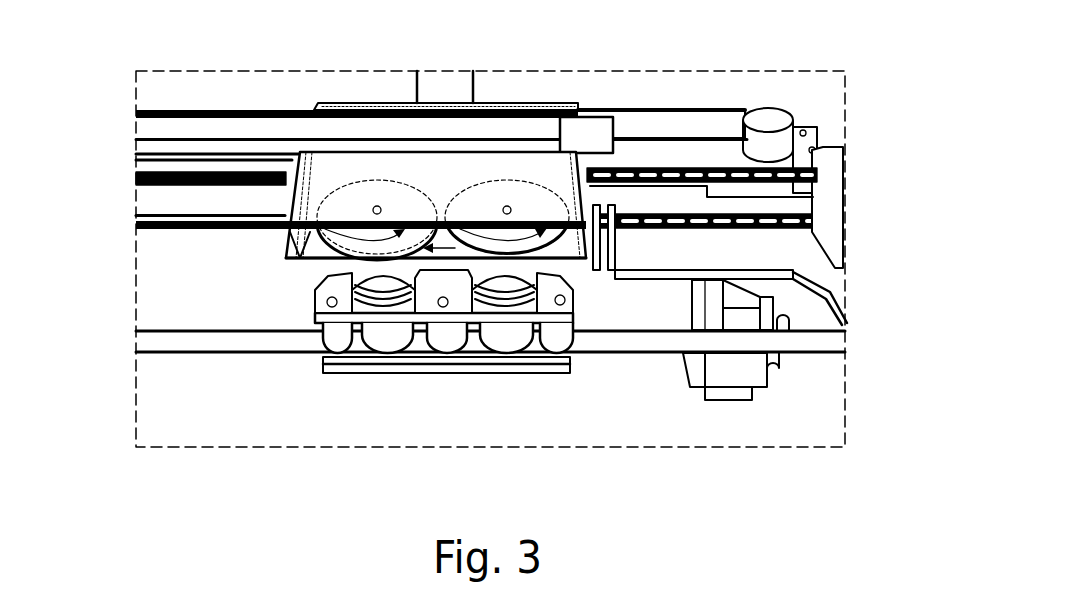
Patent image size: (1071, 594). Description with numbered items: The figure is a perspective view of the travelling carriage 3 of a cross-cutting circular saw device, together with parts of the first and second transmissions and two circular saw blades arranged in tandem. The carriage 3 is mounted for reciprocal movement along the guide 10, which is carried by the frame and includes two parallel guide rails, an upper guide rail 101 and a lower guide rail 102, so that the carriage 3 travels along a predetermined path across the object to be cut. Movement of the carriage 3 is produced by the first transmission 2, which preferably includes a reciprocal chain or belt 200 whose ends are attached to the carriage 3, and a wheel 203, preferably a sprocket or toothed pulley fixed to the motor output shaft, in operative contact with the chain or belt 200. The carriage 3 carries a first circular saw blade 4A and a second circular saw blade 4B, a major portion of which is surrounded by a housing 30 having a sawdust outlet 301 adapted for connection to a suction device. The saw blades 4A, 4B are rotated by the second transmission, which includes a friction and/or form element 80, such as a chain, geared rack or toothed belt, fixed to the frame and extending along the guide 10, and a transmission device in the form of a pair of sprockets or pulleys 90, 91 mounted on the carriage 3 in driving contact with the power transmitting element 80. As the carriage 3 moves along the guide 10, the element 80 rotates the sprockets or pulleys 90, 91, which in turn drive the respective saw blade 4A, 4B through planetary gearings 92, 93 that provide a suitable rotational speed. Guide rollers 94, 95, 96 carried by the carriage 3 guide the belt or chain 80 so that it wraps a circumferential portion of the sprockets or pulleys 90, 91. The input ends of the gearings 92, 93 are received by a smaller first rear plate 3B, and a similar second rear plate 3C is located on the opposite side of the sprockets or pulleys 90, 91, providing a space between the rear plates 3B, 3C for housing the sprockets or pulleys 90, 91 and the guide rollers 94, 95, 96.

The first transmission 2 is at (695, 102).
The carriage 3 is at (328, 97).
The housing 30 is at (493, 169).
The sawdust outlet 301 is at (443, 95).
The reciprocal chain or belt 200 is at (622, 118).
The wheel 203 is at (773, 118).
The guide 10 is at (128, 201).
The upper guide rail 101 is at (133, 177).
The lower guide rail 102 is at (133, 221).
The first circular saw blade 4A is at (283, 235).
The second circular saw blade 4B is at (548, 243).
The friction and/or form element 80 is at (823, 338).
The sprocket or pulley 90 is at (390, 357).
The sprocket or pulley 91 is at (500, 357).
The planetary gearing 92 is at (315, 322).
The planetary gearing 93 is at (550, 277).
The guide roller 94 is at (572, 307).
The guide roller 95 is at (325, 280).
The guide roller 96 is at (445, 357).
The first rear plate 3B is at (336, 325).
The second rear plate 3C is at (332, 358).